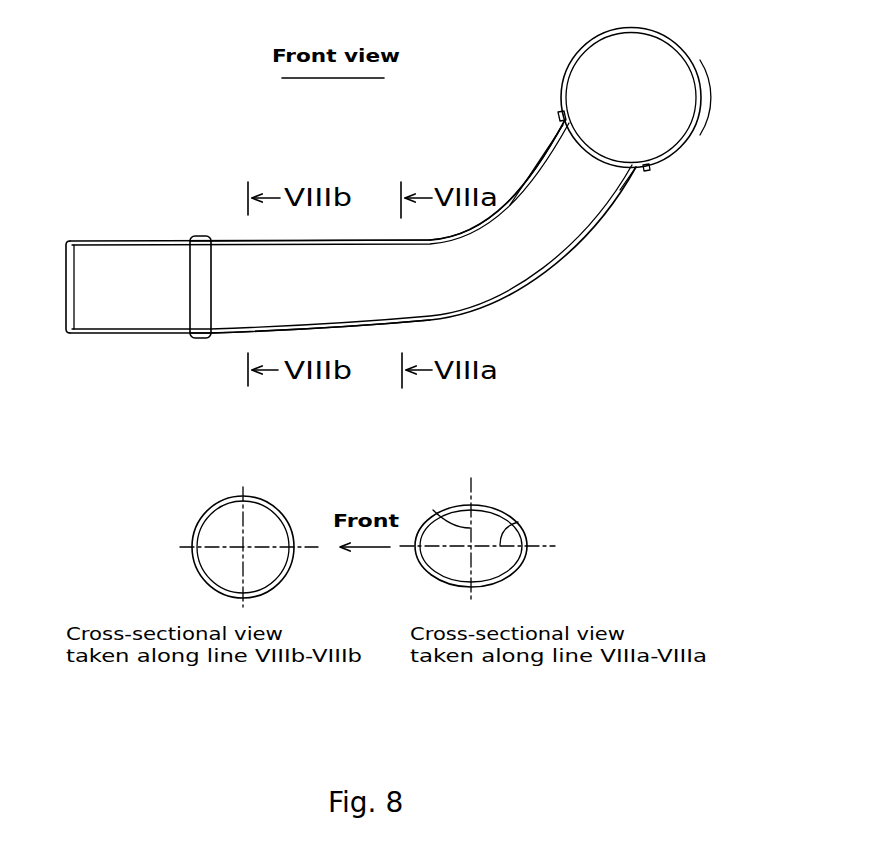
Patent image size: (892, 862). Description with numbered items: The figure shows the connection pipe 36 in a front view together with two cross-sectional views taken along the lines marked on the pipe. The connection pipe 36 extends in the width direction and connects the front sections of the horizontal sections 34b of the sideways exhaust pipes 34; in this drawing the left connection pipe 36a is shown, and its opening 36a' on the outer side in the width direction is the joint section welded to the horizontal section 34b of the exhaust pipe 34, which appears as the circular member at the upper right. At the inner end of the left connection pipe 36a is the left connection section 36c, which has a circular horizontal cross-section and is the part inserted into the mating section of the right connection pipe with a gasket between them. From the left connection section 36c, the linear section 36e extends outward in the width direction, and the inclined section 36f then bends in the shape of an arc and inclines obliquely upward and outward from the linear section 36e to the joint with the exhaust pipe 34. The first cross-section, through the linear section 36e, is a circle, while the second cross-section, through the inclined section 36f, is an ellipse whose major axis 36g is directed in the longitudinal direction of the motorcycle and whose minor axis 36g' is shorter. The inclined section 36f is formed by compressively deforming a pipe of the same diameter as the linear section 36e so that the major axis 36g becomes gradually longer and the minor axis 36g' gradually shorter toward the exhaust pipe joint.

The sideways exhaust pipe 34 is at (697, 51).
The horizontal section 34b is at (699, 78).
The connection pipe 36 is at (262, 178).
The left connection pipe 36a is at (390, 366).
The opening 36a' is at (654, 209).
The left connection section 36c is at (120, 238).
The linear section 36e is at (287, 232).
The inclined section 36f is at (538, 172).
The major axis 36g is at (564, 525).
The minor axis 36g' is at (426, 492).